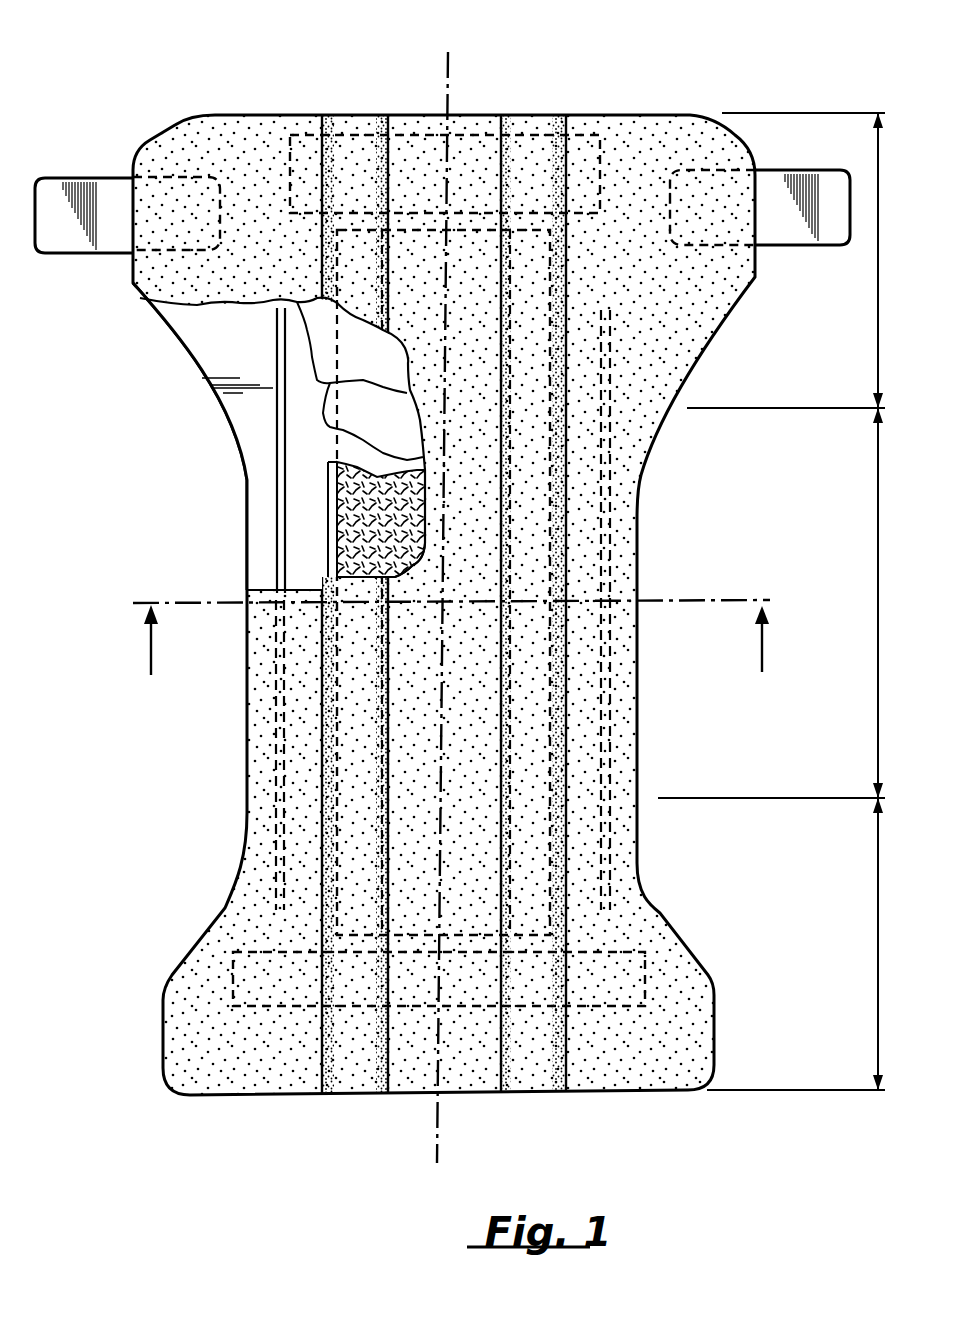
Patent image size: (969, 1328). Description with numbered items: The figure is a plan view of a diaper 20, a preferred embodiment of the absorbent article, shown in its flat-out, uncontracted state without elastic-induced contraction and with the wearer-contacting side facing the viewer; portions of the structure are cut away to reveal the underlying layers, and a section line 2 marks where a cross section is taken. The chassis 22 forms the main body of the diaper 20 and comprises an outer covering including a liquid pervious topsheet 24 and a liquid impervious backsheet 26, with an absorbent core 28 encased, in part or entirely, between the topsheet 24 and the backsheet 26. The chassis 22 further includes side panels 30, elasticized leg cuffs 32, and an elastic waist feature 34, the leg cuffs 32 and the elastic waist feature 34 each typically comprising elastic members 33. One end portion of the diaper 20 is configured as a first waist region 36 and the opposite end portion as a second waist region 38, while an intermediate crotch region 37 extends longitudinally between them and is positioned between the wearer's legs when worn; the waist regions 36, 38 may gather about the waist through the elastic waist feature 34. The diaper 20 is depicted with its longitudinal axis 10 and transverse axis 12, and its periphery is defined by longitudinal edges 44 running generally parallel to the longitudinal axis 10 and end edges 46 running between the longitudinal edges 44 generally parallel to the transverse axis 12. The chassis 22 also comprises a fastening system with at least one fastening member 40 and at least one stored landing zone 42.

The section line 2- 2 is at (453, 631).
The longitudinal axis 10 is at (438, 1140).
The transverse axis 12 is at (690, 600).
The diaper 20 is at (754, 76).
The chassis 22 is at (483, 740).
The liquid pervious topsheet 24 is at (397, 745).
The liquid impervious backsheet 26 is at (208, 350).
The absorbent core 28 is at (316, 488).
The side panels 30 is at (228, 170).
The elasticized leg cuffs 32 is at (306, 699).
The elastic members 33 is at (385, 278).
The elastic waist feature 34 is at (485, 160).
The first waist region 36 is at (811, 944).
The crotch region 37 is at (788, 603).
The second waist region 38 is at (802, 260).
The fastening member 40 is at (108, 188).
The stored landing zone 42 is at (295, 985).
The longitudinal edges 44 is at (247, 830).
The end edges 46 is at (345, 115).